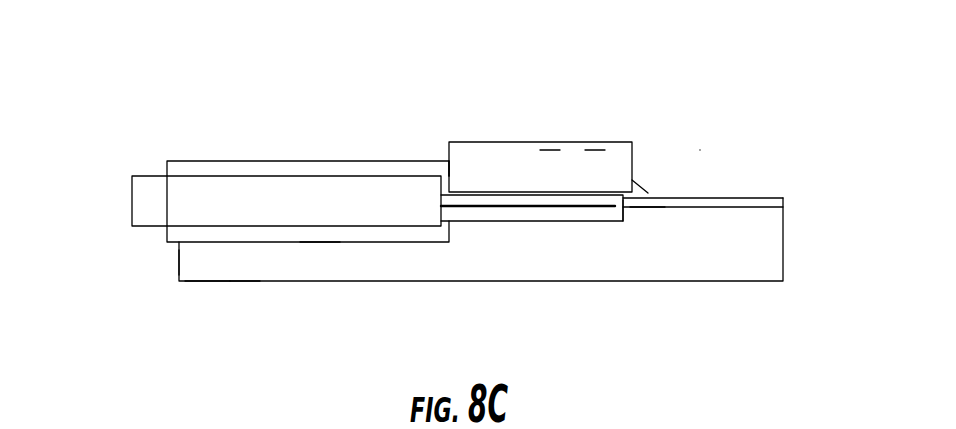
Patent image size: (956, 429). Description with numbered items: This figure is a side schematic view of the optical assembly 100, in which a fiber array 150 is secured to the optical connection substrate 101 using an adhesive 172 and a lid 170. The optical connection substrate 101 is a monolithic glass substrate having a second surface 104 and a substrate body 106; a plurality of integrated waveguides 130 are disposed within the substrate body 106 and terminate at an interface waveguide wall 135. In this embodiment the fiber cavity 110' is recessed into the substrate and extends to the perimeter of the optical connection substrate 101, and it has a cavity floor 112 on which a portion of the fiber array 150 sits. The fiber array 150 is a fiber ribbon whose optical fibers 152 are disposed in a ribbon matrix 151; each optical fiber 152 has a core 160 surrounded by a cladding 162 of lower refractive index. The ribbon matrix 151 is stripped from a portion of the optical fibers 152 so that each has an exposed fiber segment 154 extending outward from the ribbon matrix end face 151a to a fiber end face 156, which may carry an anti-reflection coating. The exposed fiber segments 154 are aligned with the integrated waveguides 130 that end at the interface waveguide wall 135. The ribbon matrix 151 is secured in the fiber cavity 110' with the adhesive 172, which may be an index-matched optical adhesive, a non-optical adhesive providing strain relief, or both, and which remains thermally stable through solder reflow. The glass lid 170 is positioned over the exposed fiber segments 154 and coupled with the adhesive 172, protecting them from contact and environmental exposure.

The optical assembly 100 is at (714, 102).
The optical connection substrate 101 is at (767, 185).
The second surface 104 is at (197, 277).
The substrate body 106 is at (178, 268).
The fiber cavity 110' is at (232, 332).
The cavity floor 112 is at (324, 240).
The integrated waveguides 130 is at (723, 198).
The interface waveguide wall 135 is at (622, 215).
The fiber array 150 is at (236, 172).
The ribbon matrix 151 is at (288, 160).
The ribbon matrix end face 151a is at (446, 173).
The optical fibers 152 is at (596, 181).
The exposed fiber segment 154 is at (557, 181).
The fiber end face 156 is at (647, 208).
The core 160 is at (480, 207).
The cladding 162 is at (460, 197).
The lid 170 is at (537, 141).
The adhesive 172 is at (357, 160).